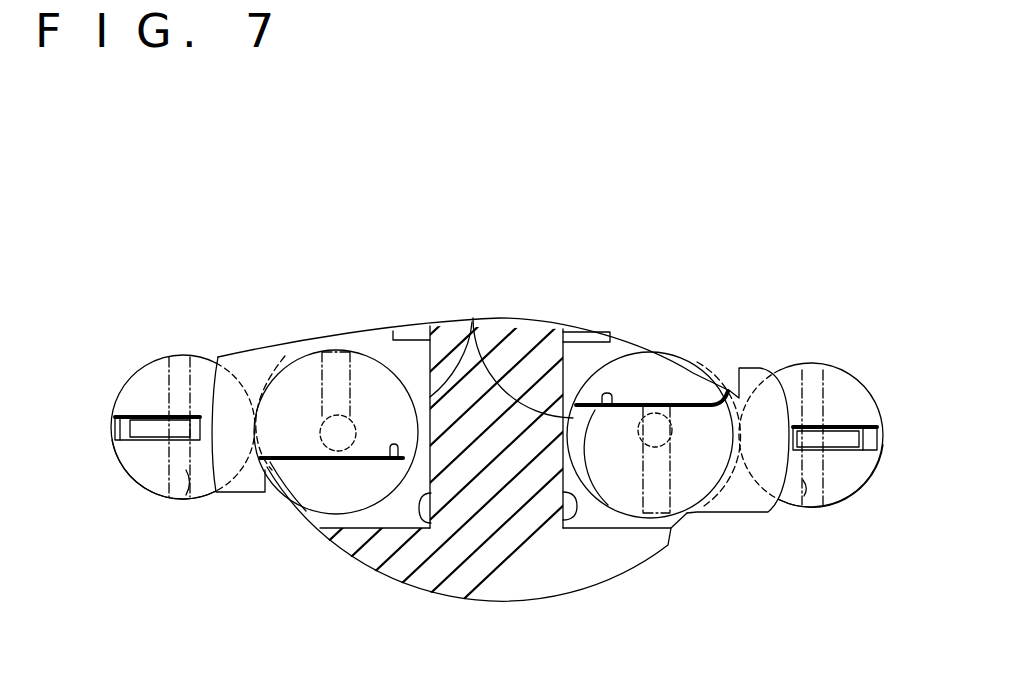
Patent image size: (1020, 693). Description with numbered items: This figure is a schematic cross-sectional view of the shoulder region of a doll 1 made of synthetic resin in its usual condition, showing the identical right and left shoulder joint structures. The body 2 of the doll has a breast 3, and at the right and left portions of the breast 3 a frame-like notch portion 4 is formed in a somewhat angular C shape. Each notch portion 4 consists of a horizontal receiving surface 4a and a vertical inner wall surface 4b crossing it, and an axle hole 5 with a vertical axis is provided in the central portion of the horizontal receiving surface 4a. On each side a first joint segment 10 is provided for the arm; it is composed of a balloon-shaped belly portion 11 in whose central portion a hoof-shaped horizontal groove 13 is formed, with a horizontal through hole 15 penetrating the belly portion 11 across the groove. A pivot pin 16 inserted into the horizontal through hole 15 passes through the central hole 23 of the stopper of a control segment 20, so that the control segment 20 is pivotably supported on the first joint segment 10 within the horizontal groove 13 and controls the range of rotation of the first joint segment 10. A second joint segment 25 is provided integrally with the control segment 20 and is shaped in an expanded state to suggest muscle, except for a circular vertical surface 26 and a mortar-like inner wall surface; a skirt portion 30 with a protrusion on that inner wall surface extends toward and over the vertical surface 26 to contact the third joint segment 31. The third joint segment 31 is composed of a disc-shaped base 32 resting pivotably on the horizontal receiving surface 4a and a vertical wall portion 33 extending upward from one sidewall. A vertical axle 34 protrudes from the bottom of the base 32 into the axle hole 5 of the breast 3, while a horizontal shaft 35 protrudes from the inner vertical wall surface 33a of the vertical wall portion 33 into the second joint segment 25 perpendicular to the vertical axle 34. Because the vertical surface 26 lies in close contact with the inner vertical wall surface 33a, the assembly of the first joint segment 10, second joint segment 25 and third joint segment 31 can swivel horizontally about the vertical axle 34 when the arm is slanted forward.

The doll 1 is at (583, 220).
The body 2 is at (552, 602).
The breast 3 is at (393, 568).
The notch portion 4 is at (408, 345).
The horizontal receiving surface 4a is at (585, 340).
The vertical inner wall surface 4b is at (558, 470).
The axle hole 5 is at (327, 412).
The first joint segment 10 is at (133, 355).
The belly portion 11 is at (128, 463).
The horizontal groove 13 is at (120, 427).
The horizontal through hole 15 is at (190, 490).
The pivot pin 16 is at (192, 360).
The control segment 20 is at (152, 412).
The central hole 23 is at (190, 427).
The second joint segment 25 is at (267, 345).
The vertical surface 26 is at (377, 470).
The skirt portion 30 is at (247, 488).
The third joint segment 31 is at (297, 505).
The base 32 is at (472, 320).
The vertical wall portion 33 is at (340, 510).
The inner vertical wall surface 33a is at (398, 455).
The vertical axle 34 is at (365, 410).
The horizontal shaft 35 is at (318, 358).